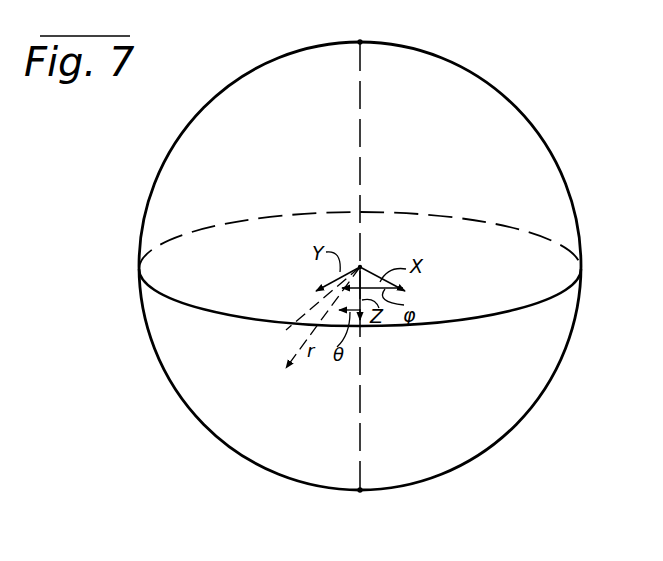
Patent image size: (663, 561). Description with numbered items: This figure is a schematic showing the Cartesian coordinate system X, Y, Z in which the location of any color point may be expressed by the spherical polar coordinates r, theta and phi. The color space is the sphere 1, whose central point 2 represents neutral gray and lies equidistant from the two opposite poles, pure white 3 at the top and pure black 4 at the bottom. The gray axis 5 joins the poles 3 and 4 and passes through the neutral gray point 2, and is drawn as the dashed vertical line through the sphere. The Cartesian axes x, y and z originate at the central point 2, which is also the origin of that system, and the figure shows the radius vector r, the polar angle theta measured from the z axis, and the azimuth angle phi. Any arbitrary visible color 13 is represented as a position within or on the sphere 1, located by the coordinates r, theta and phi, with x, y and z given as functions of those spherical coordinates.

The sphere 1 is at (560, 162).
The central point 2 is at (362, 266).
The pure white pole 3 is at (361, 41).
The pure black pole 4 is at (360, 492).
The gray axis 5 is at (362, 143).
The arbitrary visible color 13 is at (295, 368).